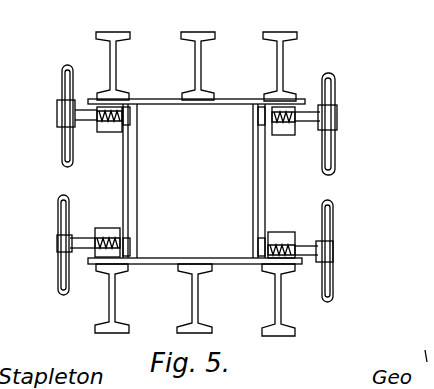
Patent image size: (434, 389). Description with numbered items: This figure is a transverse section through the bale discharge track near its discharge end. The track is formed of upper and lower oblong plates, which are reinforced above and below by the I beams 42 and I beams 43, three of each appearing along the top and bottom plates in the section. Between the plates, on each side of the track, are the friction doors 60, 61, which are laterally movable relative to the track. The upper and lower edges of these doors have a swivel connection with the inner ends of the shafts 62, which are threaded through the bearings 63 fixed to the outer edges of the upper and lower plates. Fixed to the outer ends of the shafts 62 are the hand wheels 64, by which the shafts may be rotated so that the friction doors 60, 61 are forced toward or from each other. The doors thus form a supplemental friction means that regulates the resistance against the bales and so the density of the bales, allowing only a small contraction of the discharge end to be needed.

The I beam 42 is at (117, 86).
The I beam 43 is at (116, 293).
The friction door 60 is at (138, 183).
The friction door 61 is at (255, 188).
The shaft 62 is at (90, 124).
The bearing 63 is at (113, 133).
The hand wheel 64 is at (62, 158).